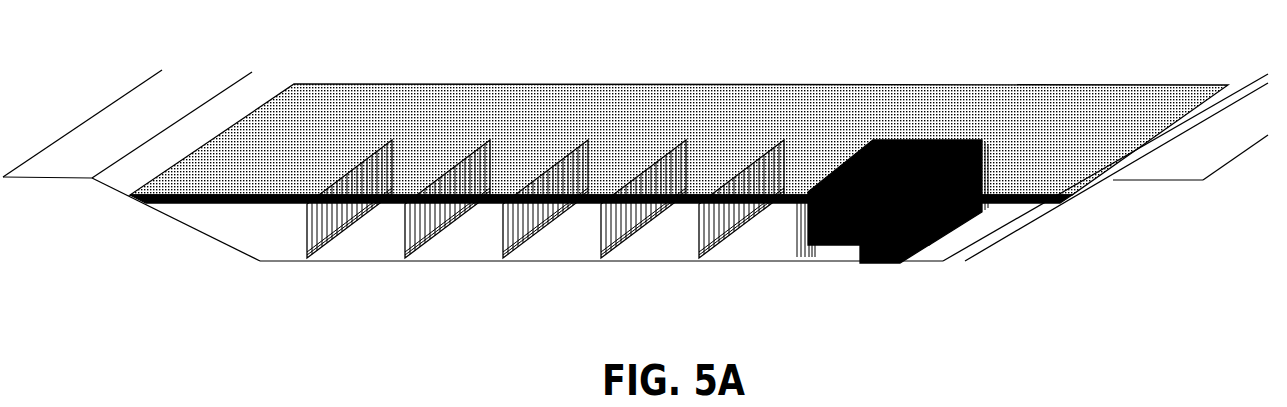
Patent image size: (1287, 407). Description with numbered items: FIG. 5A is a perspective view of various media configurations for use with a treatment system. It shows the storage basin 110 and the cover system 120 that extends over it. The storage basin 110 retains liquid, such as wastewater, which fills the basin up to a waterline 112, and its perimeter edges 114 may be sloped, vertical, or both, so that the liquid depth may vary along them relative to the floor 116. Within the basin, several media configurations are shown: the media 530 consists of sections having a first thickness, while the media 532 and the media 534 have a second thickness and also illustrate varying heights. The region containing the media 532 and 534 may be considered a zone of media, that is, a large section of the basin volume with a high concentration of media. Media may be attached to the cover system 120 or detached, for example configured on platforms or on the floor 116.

The storage basin 110 is at (267, 242).
The waterline 112 is at (145, 205).
The perimeter edges 114 is at (200, 230).
The floor 116 is at (435, 260).
The cover system 120 is at (917, 118).
The media 530 is at (517, 232).
The media 532 is at (815, 245).
The media 534 is at (900, 262).